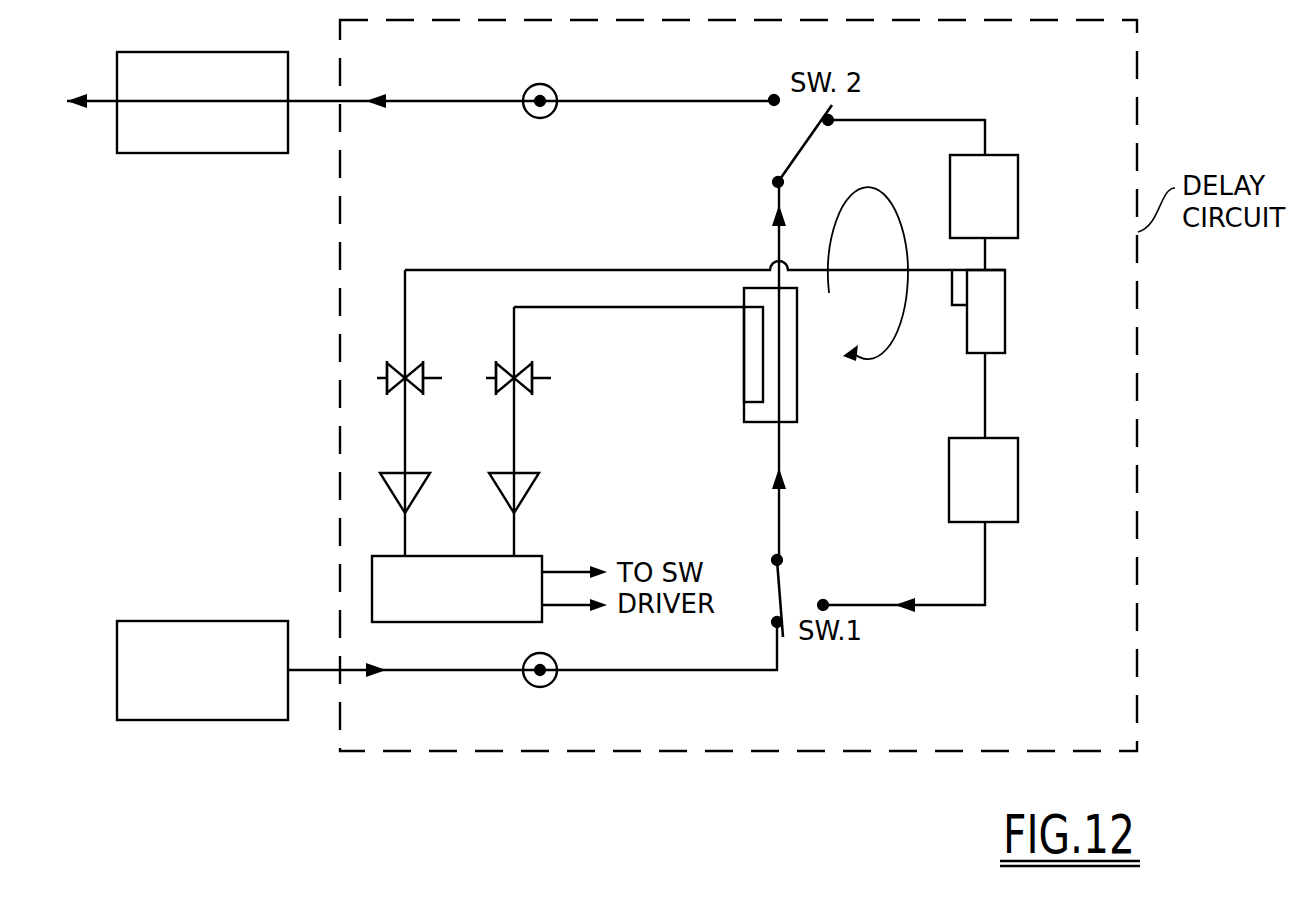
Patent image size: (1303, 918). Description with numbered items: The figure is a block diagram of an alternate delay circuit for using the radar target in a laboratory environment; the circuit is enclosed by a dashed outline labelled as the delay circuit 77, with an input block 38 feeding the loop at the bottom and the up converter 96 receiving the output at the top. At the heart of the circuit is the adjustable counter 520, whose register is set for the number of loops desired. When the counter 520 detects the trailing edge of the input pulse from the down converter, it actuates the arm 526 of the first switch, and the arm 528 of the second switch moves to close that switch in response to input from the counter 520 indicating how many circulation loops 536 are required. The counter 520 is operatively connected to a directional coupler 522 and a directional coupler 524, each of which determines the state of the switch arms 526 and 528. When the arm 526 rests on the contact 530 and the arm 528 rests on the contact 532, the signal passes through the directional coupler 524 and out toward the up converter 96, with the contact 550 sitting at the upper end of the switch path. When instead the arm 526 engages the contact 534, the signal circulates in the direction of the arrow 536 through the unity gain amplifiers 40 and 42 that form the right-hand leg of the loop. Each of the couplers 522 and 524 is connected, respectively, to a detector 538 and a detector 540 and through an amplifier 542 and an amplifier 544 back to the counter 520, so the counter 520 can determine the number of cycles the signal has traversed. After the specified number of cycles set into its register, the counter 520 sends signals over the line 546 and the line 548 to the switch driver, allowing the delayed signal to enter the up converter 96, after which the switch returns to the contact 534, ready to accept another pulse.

The up converter 96 is at (210, 118).
The input block 38 is at (212, 686).
The unity gain amplifier 40 is at (968, 211).
The unity gain amplifier 42 is at (967, 496).
The delay circuit 77 is at (1138, 390).
The adjustable counter 520 is at (458, 622).
The directional coupler 522 is at (1005, 302).
The directional coupler 524 is at (744, 366).
The arm of switch S.W.1 526 is at (781, 593).
The arm of switch S.W.2 528 is at (801, 150).
The contact 530 is at (775, 625).
The contact 532 is at (829, 123).
The contact 534 is at (824, 604).
The circulation loop arrow 536 is at (848, 346).
The detector 538 is at (408, 368).
The detector 540 is at (517, 368).
The amplifier 542 is at (410, 473).
The amplifier 544 is at (519, 473).
The line 546 is at (562, 572).
The line 548 is at (563, 606).
The switch SW.2 contact 550 is at (773, 103).